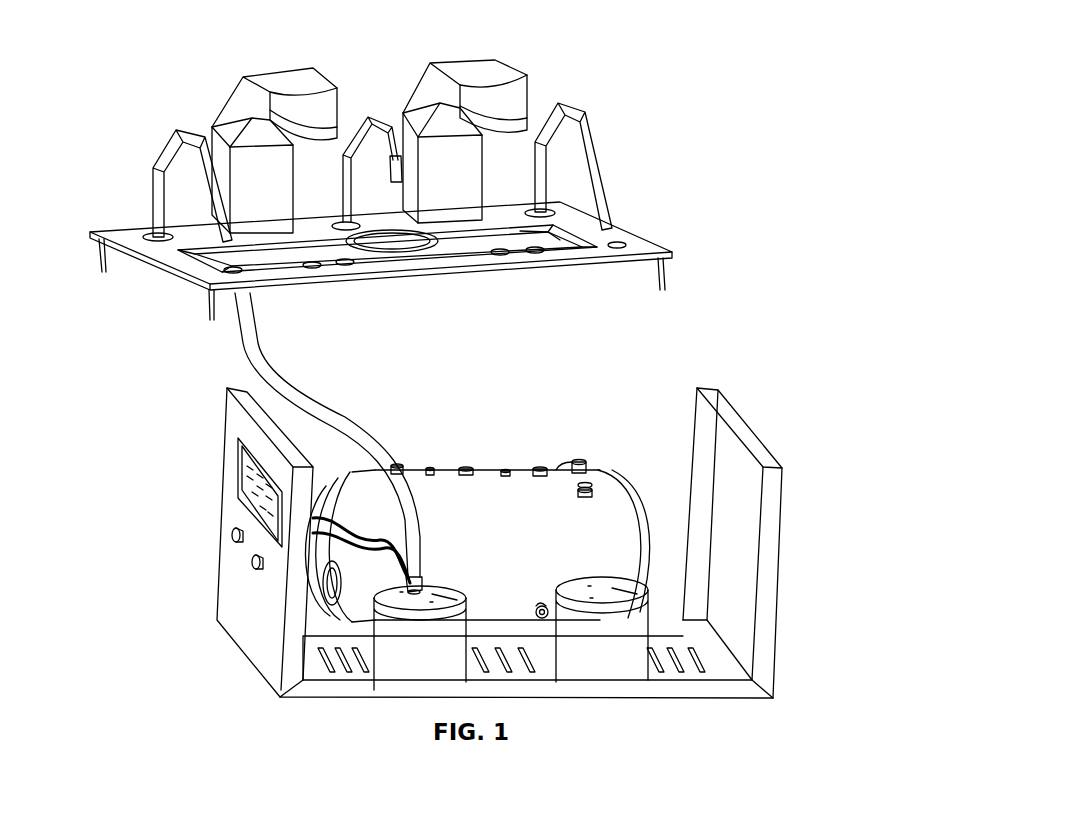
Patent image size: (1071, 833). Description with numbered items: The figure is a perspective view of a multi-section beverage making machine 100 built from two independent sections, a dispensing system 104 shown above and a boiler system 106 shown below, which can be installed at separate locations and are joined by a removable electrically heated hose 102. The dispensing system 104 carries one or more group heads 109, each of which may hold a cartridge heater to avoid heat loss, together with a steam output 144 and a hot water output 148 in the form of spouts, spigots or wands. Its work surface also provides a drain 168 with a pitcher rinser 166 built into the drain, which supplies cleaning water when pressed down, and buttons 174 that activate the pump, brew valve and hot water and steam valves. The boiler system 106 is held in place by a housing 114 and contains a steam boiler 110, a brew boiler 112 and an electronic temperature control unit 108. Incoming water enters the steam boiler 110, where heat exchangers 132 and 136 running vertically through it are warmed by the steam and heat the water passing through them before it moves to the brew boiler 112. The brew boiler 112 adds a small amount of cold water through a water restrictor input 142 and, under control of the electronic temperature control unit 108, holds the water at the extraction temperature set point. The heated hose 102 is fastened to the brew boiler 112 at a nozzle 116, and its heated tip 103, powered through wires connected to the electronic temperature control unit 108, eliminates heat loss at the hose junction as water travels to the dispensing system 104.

The multi-section beverage making machine 100 is at (832, 178).
The removable electrically heated hose 102 is at (334, 410).
The heated tip 103 is at (410, 583).
The dispensing system 104 is at (152, 78).
The boiler system 106 is at (822, 637).
The electronic temperature control unit 108 is at (245, 510).
The group head 109 is at (417, 97).
The steam boiler 110 is at (533, 482).
The brew boiler 112 is at (397, 655).
The housing 114 is at (775, 488).
The nozzle 116 is at (423, 596).
The heat exchanger 132 is at (415, 454).
The heat exchanger 136 is at (583, 448).
The water restrictor input 142 is at (449, 586).
The steam output 144 is at (160, 140).
The hot water output 148 is at (375, 112).
The pitcher rinser 166 is at (407, 243).
The drain 168 is at (541, 236).
The buttons 174 is at (352, 263).